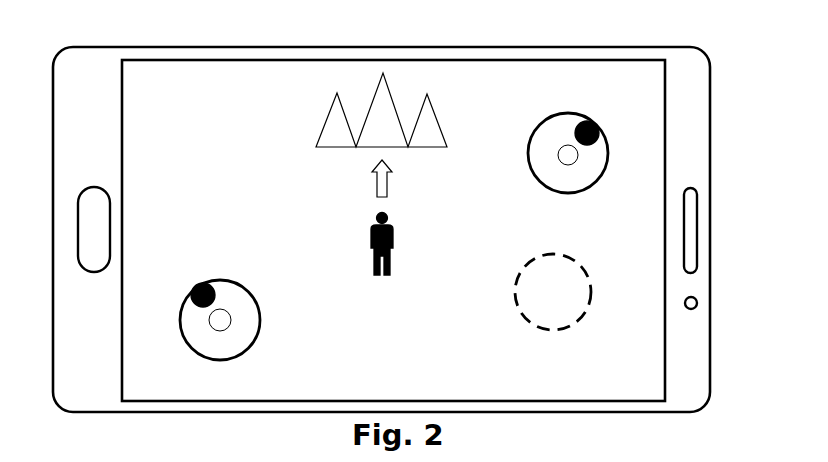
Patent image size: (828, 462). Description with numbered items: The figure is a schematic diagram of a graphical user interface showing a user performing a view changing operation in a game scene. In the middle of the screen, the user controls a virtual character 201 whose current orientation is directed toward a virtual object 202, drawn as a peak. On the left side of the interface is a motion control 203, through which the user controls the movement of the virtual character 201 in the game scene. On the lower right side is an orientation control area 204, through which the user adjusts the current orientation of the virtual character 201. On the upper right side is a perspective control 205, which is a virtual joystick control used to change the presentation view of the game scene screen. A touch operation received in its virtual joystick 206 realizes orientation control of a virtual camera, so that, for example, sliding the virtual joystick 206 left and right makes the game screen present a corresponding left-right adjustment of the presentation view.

The virtual character 201 is at (394, 232).
The virtual object (peak) 202 is at (316, 147).
The motion control 203 is at (260, 318).
The orientation control area 204 is at (595, 296).
The perspective control 205 is at (609, 156).
The virtual joystick 206 is at (597, 124).